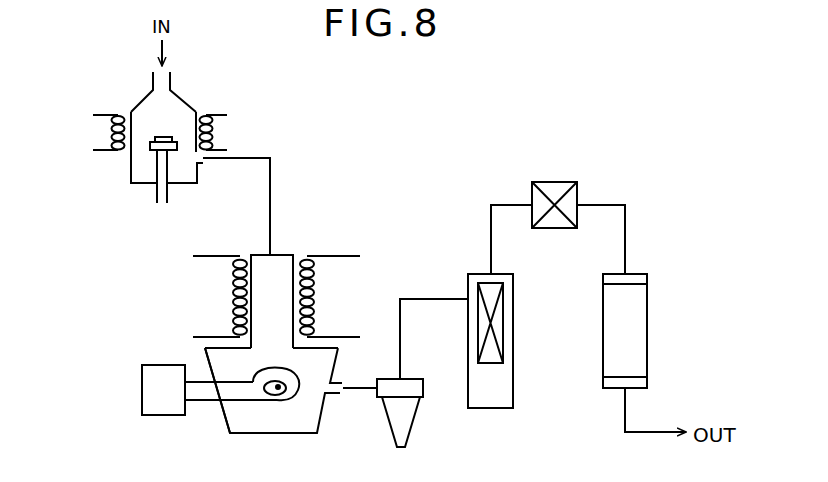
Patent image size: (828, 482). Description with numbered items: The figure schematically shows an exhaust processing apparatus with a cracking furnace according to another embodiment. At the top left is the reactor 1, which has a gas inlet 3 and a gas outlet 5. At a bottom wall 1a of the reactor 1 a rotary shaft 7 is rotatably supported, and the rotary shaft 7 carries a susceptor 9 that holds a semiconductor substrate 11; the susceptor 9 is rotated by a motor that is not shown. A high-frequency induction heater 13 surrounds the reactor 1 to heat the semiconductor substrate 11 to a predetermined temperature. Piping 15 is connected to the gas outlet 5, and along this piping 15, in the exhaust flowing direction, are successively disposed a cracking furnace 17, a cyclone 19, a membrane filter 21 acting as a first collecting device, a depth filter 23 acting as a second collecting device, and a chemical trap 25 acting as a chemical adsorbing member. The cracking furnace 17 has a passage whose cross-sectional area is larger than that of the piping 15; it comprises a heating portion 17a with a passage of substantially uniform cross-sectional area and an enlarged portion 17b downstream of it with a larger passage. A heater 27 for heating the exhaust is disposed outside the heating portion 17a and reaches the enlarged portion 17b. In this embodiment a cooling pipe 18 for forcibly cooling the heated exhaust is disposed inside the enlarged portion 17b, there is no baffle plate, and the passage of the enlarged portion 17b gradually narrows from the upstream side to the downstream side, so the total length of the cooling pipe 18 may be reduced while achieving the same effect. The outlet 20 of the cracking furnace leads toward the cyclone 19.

The reactor 1 is at (124, 170).
The bottom wall 1a is at (142, 185).
The gas inlet 3 is at (170, 80).
The gas outlet 5 is at (203, 163).
The rotary shaft 7 is at (167, 192).
The susceptor 9 is at (150, 155).
The semiconductor substrate 11 is at (167, 135).
The high-frequency induction heater 13 is at (207, 132).
The piping 15 is at (271, 187).
The cracking furnace 17 is at (281, 439).
The heating portion 17a is at (260, 278).
The enlarged portion 17b is at (233, 422).
The cooling pipe 18 is at (233, 377).
The cyclone 19 is at (395, 425).
The outlet 20 is at (335, 393).
The membrane filter 21 is at (513, 373).
The depth filter 23 is at (563, 182).
The chemical trap 25 is at (648, 316).
The heater 27 is at (311, 277).